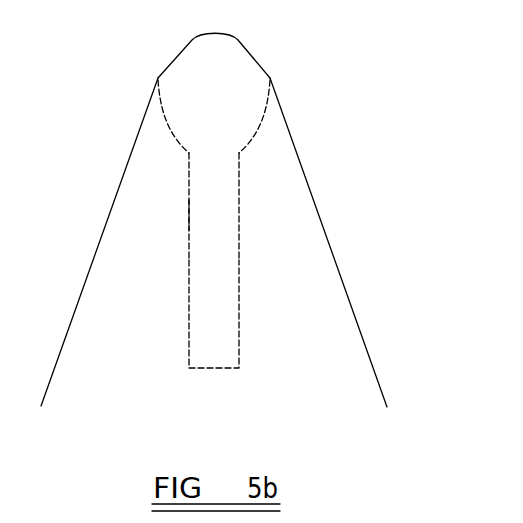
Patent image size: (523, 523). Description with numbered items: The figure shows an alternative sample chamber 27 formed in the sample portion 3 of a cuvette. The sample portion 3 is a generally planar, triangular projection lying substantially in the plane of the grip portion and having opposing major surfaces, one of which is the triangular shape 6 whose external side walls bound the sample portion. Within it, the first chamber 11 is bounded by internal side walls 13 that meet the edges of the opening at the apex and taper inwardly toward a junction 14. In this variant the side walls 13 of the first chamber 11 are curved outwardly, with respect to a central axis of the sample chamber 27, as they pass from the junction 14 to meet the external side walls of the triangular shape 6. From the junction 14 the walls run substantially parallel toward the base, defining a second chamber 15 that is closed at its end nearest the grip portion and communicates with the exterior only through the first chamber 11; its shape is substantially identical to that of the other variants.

The first chamber 11 is at (214, 58).
The sample portion 3 is at (110, 213).
The major surface 6 is at (335, 258).
The internal side walls 13 is at (165, 137).
The junction 14 is at (215, 158).
The second chamber 15 is at (215, 309).
The sample chamber 27 is at (193, 215).